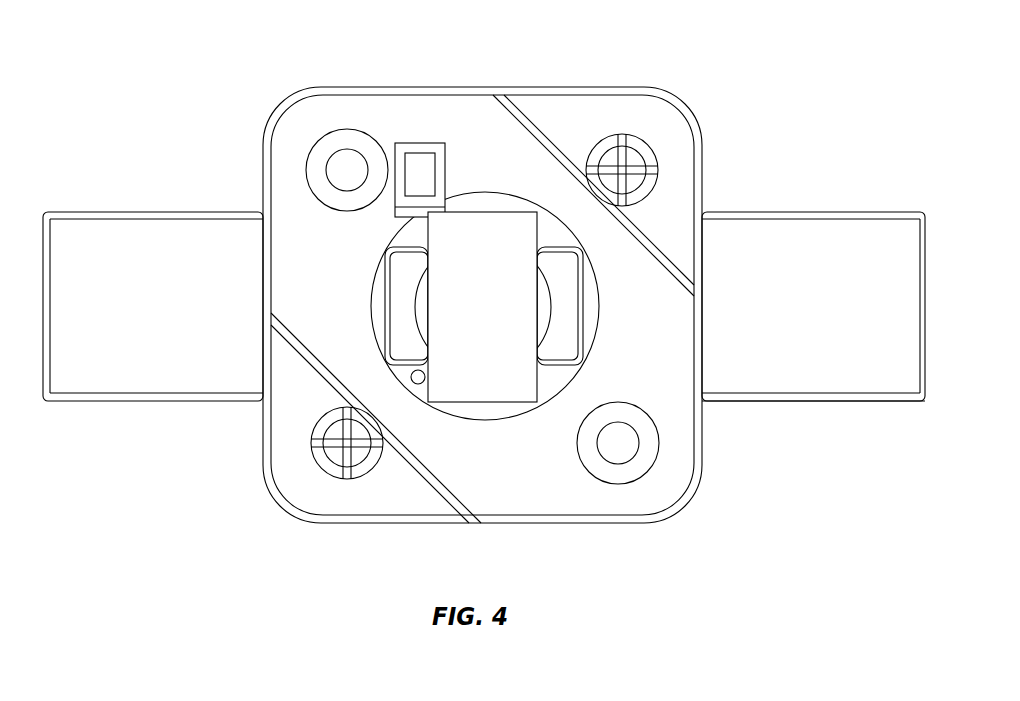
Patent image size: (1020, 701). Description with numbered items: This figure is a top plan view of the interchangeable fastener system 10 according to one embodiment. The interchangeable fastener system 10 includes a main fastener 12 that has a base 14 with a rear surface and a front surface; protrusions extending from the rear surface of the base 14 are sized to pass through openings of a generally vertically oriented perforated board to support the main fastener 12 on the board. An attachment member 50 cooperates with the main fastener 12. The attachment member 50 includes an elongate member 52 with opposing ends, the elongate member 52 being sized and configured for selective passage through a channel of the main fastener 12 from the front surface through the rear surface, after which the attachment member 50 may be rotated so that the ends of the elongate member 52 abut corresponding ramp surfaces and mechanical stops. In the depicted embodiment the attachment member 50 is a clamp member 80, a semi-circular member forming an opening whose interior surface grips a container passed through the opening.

The interchangeable fastener system 10 is at (130, 504).
The main fastener 12 is at (688, 110).
The base 14 is at (246, 107).
The attachment member 50 is at (793, 211).
The elongate member 52 is at (465, 225).
The clamp member 80 is at (805, 378).